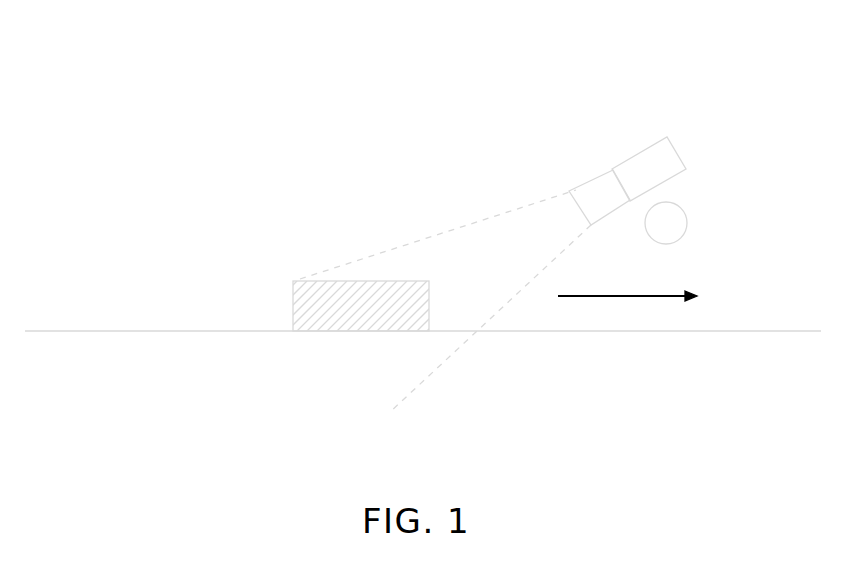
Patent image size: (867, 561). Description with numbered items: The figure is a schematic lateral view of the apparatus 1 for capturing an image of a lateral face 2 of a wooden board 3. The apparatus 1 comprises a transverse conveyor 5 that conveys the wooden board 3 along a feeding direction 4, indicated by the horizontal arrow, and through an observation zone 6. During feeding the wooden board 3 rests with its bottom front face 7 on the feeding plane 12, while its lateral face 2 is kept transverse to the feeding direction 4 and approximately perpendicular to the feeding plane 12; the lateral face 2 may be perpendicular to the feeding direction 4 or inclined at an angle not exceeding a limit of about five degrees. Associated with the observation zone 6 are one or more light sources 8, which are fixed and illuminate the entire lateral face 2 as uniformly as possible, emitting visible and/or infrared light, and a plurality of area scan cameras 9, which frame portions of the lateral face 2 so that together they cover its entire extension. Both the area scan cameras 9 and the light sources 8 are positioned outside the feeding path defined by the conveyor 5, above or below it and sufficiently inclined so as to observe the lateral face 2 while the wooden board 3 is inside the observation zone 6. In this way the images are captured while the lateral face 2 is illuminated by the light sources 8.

The apparatus 1 is at (512, 115).
The lateral face 2 is at (442, 295).
The wooden board 3 is at (360, 302).
The feeding direction 4 is at (607, 297).
The conveyor 5 is at (713, 330).
The observation zone 6 is at (467, 365).
The bottom front face 7 is at (333, 280).
The light source 8 is at (662, 228).
The area scan camera 9 is at (653, 163).
The feeding plane 12 is at (212, 328).